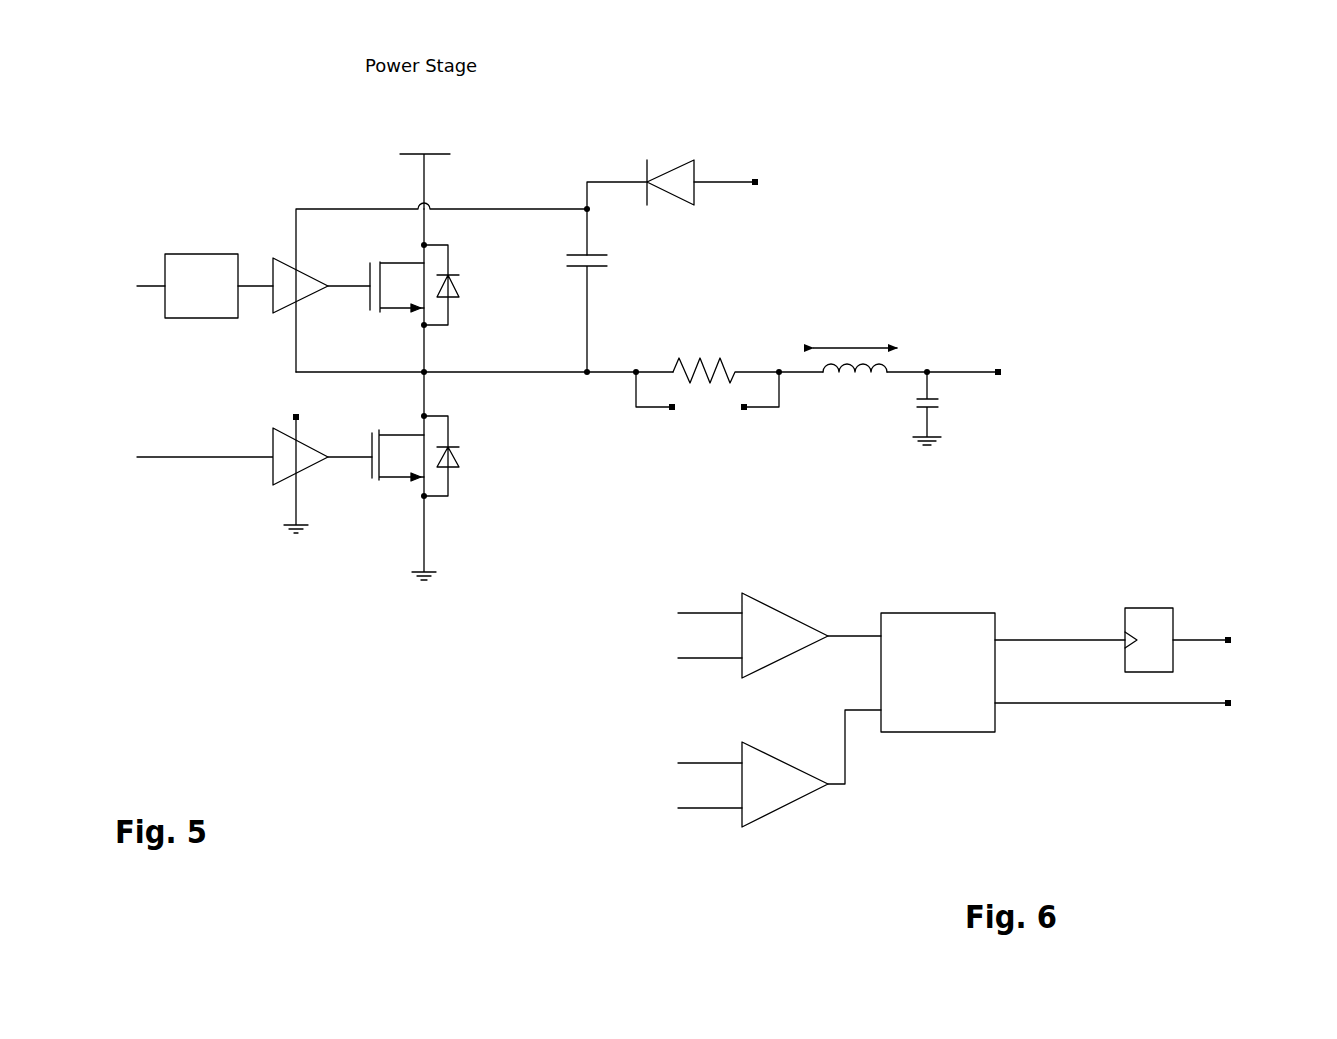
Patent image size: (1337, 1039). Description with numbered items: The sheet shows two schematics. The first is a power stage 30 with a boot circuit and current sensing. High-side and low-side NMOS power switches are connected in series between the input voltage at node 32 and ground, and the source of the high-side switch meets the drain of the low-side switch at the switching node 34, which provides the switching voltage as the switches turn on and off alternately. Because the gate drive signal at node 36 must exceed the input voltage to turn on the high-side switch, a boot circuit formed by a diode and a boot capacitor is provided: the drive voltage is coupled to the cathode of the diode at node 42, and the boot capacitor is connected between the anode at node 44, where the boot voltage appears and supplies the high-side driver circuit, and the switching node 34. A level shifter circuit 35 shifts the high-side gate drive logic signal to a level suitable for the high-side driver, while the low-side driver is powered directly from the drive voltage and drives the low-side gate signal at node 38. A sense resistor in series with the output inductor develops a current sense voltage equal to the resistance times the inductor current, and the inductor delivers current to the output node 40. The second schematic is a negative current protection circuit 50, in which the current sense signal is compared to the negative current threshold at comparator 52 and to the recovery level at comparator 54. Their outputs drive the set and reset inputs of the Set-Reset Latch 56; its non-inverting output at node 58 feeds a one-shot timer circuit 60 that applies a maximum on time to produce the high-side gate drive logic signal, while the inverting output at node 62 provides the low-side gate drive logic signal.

In FIG. 5, the power stage 30 is at (716, 80).
In FIG. 5, the input voltage node 32 is at (430, 157).
In FIG. 5, the switching node 34 is at (428, 376).
In FIG. 5, the level shifter circuit 35 is at (207, 254).
In FIG. 5, the gate drive signal node 36 is at (345, 290).
In FIG. 5, the low-side gate signal GL 38 is at (347, 462).
In FIG. 5, the output node 40 is at (983, 368).
In FIG. 5, the cathode node of diode D1 42 is at (723, 182).
In FIG. 5, the anode node of diode D1 44 is at (590, 213).
In FIG. 6, the negative current protection circuit 50 is at (1260, 527).
In FIG. 6, the comparator 52 is at (784, 611).
In FIG. 6, the comparator 54 is at (777, 757).
In FIG. 6, the Set-Reset Latch 56 is at (953, 612).
In FIG. 6, the non-inverting output node 58 is at (1046, 643).
In FIG. 6, the one-shot timer circuit 60 is at (1178, 655).
In FIG. 6, the inverting output node 62 is at (1082, 707).